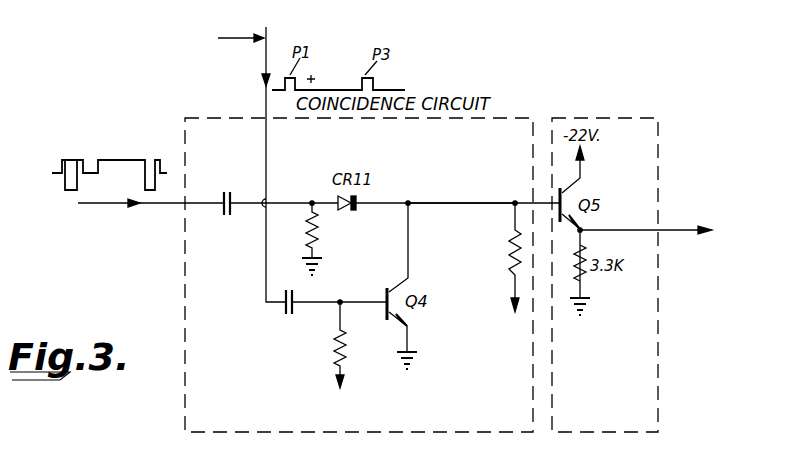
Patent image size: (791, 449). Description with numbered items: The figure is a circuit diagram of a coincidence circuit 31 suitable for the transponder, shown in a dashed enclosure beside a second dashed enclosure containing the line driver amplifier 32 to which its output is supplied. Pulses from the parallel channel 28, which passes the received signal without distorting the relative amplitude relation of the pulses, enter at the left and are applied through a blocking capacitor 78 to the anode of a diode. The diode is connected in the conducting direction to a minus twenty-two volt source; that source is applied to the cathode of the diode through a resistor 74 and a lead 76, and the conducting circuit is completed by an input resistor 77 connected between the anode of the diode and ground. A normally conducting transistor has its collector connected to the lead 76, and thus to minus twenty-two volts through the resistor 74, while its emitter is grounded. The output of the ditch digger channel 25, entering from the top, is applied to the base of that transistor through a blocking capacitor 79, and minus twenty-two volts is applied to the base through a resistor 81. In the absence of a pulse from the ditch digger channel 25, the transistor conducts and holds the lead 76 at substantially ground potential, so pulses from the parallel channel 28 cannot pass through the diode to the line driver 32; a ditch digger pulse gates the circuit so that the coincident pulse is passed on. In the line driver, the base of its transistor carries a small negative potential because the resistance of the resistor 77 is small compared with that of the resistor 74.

The ditch digger channel 25 is at (172, 164).
The parallel channel 28 is at (122, 203).
The coincidence circuit 31 is at (512, 113).
The line driver amplifier 32 is at (600, 113).
The resistor 74 is at (510, 240).
The lead 76 is at (455, 197).
The input resistor 77 is at (308, 230).
The blocking capacitor 78 is at (222, 218).
The blocking capacitor 79 is at (293, 287).
The resistor 81 is at (333, 343).